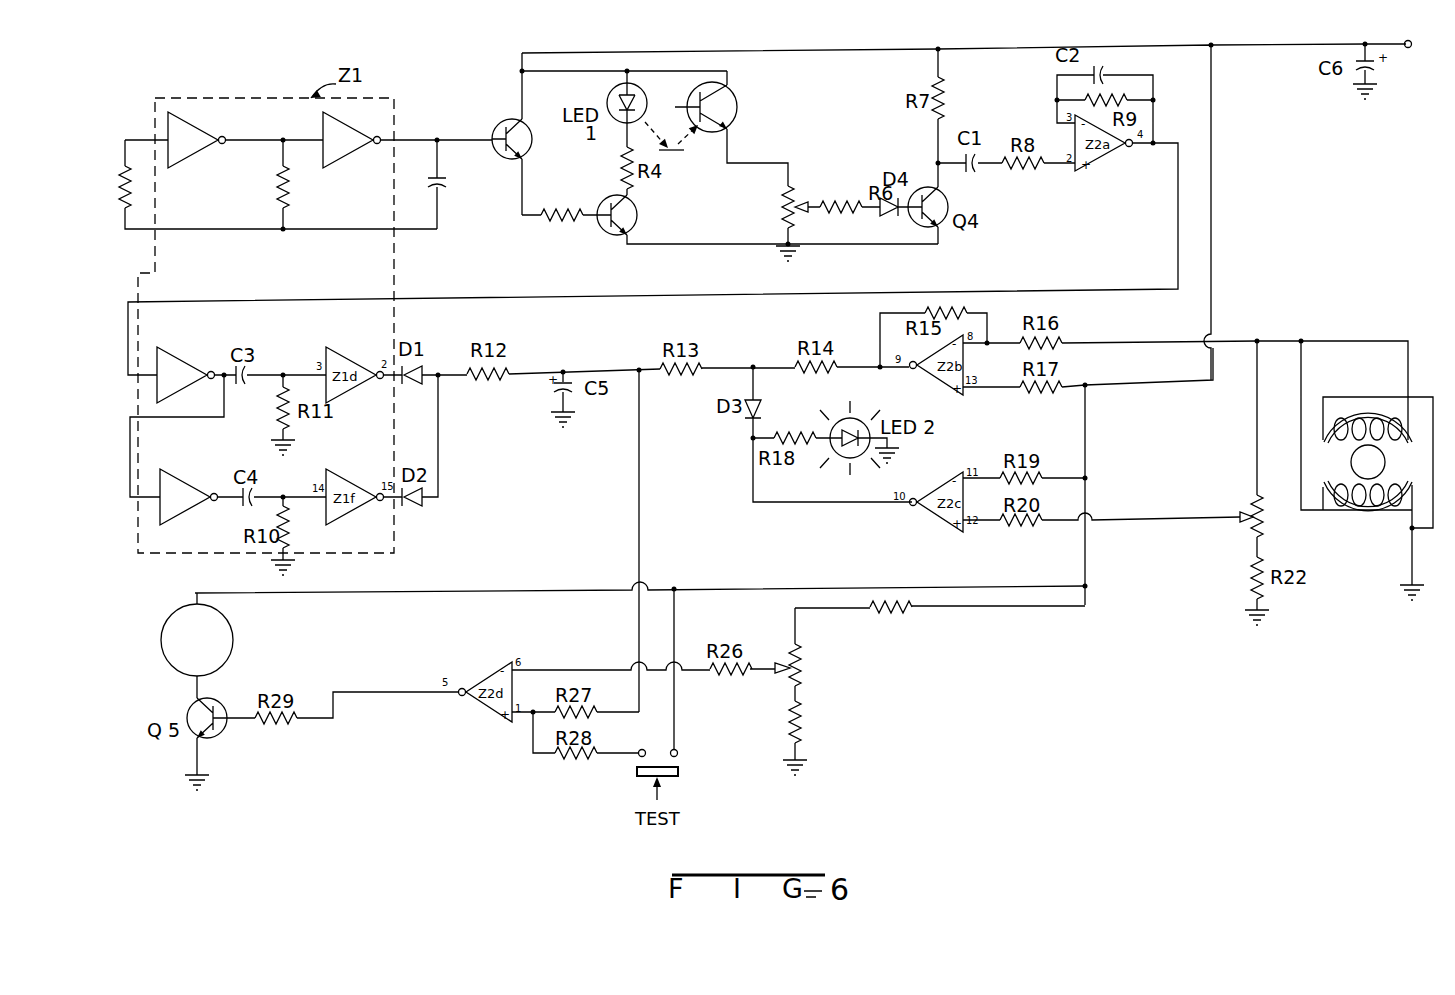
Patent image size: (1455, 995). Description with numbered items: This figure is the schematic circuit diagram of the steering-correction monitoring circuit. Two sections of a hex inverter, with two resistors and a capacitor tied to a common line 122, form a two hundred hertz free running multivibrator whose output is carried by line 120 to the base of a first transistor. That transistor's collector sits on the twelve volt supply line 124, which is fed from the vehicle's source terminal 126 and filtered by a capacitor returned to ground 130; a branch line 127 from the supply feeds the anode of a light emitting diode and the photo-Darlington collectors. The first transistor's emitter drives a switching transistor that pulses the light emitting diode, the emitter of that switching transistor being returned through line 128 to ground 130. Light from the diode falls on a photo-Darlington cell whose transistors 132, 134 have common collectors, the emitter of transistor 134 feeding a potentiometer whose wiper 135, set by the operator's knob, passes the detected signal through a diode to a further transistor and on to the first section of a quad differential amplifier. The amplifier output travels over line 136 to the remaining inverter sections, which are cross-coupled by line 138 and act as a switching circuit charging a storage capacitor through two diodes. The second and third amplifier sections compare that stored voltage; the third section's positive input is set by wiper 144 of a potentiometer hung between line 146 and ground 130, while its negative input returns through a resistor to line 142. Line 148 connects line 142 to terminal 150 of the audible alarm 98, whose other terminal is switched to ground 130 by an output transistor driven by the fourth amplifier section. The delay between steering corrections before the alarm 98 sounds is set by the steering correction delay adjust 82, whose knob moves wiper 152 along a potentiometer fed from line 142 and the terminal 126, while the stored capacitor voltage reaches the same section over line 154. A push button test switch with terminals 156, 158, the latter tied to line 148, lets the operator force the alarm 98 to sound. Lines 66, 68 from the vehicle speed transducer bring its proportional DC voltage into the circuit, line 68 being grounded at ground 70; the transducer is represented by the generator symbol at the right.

The line 66 is at (1410, 569).
The line 68 is at (1407, 399).
The ground 70 is at (1400, 592).
The steering correction delay adjust 82 is at (774, 748).
The alarm 98 is at (232, 654).
The line 120 is at (459, 134).
The line 122 is at (197, 232).
The line 124 is at (583, 53).
The 12 volt source terminal 126 is at (1402, 40).
The LED drive branch 127 is at (576, 72).
The line 128 is at (695, 252).
The ground 130 is at (280, 440).
The transistor 132 is at (698, 92).
The transistor 134 is at (736, 118).
The wiper 135 is at (794, 197).
The line 136 is at (268, 302).
The line 138 is at (184, 420).
The line 142 is at (1087, 493).
The wiper 144 is at (1244, 522).
The line 146 is at (1225, 342).
The line 148 is at (595, 583).
The terminal 150 is at (192, 604).
The wiper 152 is at (190, 683).
The line 154 is at (667, 497).
The terminal 156 is at (641, 750).
The terminal 158 is at (679, 755).